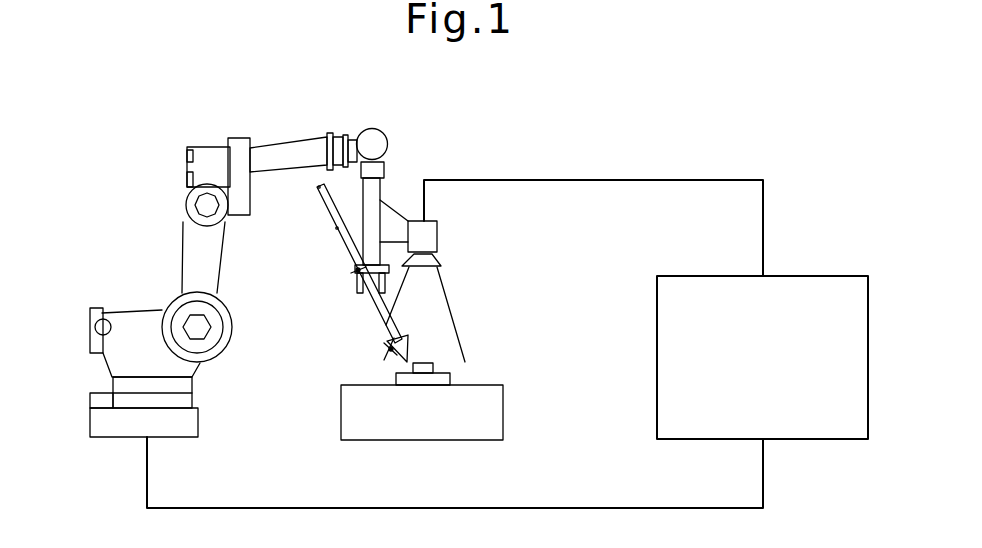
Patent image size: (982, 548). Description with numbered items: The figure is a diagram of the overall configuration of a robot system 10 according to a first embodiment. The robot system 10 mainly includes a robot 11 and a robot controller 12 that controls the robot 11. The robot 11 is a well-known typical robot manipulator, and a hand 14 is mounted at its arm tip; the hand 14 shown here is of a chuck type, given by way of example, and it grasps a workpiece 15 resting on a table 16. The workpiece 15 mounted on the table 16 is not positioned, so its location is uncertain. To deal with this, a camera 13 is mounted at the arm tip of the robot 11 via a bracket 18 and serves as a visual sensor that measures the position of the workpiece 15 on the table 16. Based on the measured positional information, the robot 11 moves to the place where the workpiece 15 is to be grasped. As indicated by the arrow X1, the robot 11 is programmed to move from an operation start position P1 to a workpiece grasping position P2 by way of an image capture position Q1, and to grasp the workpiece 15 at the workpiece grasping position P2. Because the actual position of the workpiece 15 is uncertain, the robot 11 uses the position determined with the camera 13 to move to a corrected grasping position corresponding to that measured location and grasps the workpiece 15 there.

The robot system 10 is at (713, 147).
The robot 11 is at (123, 276).
The robot controller 12 is at (800, 276).
The camera 13 is at (437, 237).
The hand 14 is at (357, 275).
The workpiece 15 is at (454, 383).
The table 16 is at (498, 413).
The bracket 18 is at (387, 222).
The operation start position P1 is at (318, 190).
The arrow X1 is at (336, 228).
The image capture position Q1 is at (358, 270).
The workpiece grasping position P2 is at (398, 348).